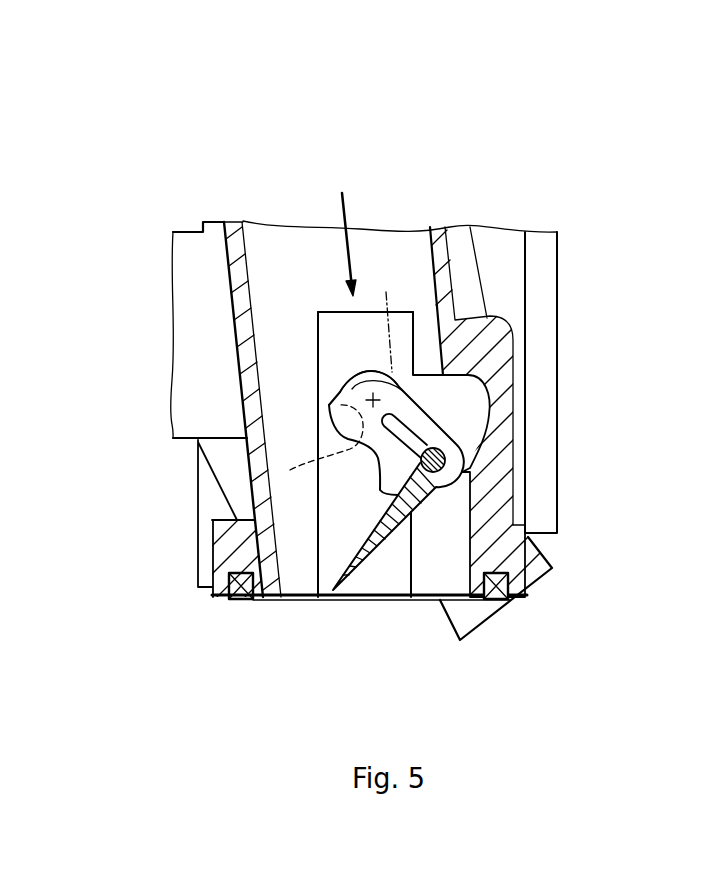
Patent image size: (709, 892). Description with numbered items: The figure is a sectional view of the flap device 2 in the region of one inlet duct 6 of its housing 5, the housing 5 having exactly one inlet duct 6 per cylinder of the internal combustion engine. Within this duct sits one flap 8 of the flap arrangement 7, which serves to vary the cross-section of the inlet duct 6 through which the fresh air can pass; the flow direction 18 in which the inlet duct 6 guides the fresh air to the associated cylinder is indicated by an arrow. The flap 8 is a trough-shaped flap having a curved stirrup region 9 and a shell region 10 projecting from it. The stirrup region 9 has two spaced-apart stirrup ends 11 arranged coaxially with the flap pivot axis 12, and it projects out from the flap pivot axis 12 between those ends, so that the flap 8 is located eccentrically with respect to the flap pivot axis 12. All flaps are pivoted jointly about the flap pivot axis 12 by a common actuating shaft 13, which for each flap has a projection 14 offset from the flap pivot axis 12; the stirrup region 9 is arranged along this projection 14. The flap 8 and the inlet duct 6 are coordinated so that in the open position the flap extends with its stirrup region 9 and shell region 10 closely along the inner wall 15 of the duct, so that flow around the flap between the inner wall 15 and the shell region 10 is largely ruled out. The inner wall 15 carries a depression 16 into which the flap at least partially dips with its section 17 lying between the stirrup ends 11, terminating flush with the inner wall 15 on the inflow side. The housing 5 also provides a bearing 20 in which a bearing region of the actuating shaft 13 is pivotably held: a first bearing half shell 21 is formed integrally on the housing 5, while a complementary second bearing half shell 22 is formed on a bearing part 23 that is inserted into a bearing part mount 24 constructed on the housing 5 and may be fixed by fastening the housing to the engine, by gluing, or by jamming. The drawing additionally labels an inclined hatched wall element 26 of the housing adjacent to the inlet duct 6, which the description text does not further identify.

The flap device 2 is at (578, 192).
The housing 5 is at (188, 231).
The inlet duct 6 is at (312, 290).
The flap arrangement 7 is at (313, 440).
The flap 8 is at (328, 588).
The stirrup region 9 is at (462, 470).
The shell region 10 is at (362, 597).
The stirrup ends 11 is at (370, 443).
The flap pivot axis 12 is at (369, 326).
The actuating shaft 13 is at (418, 422).
The projection 14 is at (448, 477).
The inner wall 15 is at (431, 278).
The depression 16 is at (467, 374).
The section 17 is at (458, 447).
The flow direction 18 is at (347, 216).
The bearing 20 is at (303, 397).
The first bearing half shell 21 is at (377, 372).
The second bearing half shell 22 is at (322, 451).
The bearing part 23 is at (382, 580).
The bearing part mount 24 is at (400, 550).
The inclined plate 26 is at (246, 262).